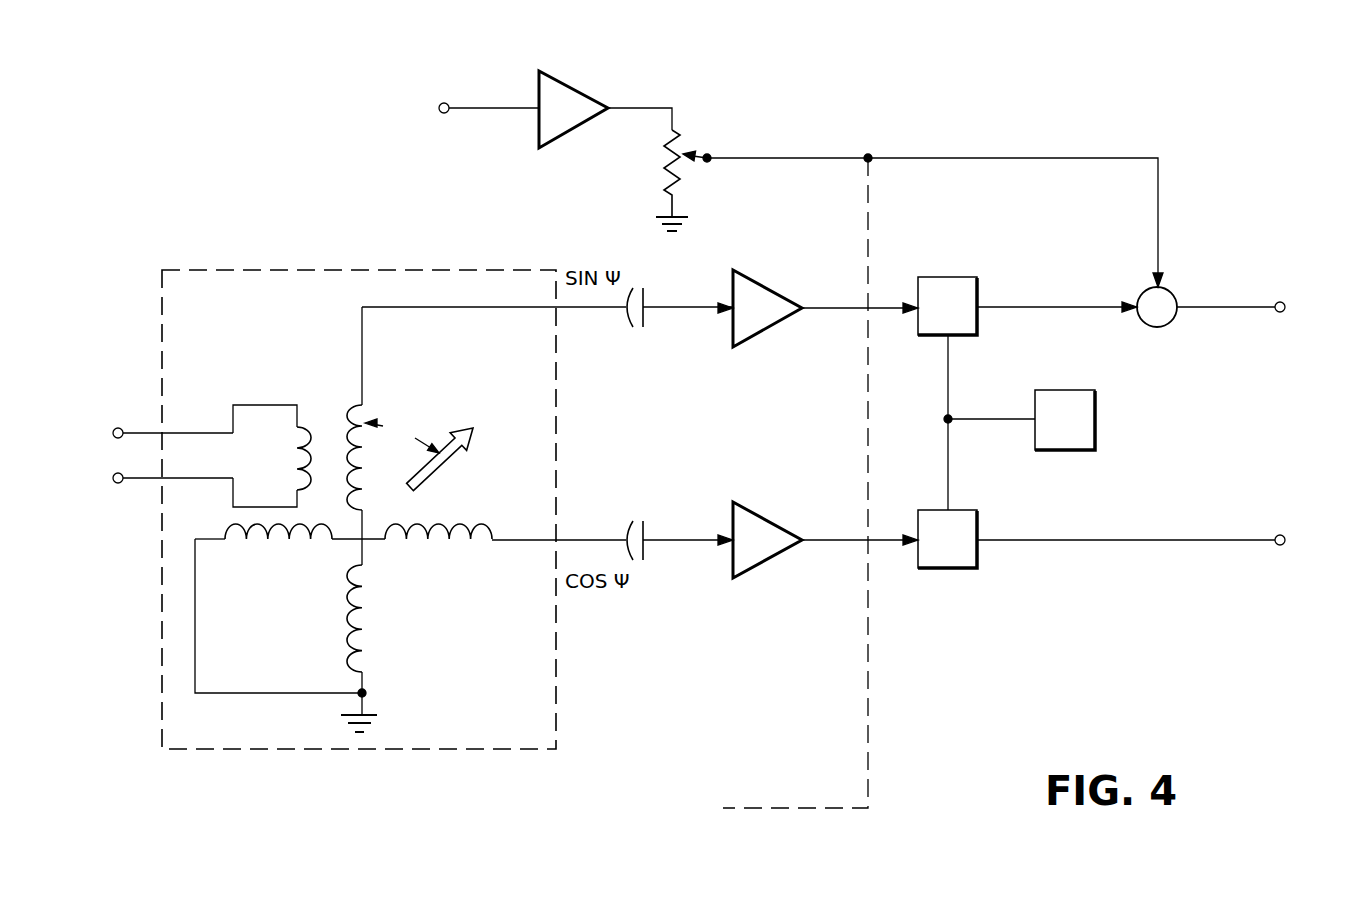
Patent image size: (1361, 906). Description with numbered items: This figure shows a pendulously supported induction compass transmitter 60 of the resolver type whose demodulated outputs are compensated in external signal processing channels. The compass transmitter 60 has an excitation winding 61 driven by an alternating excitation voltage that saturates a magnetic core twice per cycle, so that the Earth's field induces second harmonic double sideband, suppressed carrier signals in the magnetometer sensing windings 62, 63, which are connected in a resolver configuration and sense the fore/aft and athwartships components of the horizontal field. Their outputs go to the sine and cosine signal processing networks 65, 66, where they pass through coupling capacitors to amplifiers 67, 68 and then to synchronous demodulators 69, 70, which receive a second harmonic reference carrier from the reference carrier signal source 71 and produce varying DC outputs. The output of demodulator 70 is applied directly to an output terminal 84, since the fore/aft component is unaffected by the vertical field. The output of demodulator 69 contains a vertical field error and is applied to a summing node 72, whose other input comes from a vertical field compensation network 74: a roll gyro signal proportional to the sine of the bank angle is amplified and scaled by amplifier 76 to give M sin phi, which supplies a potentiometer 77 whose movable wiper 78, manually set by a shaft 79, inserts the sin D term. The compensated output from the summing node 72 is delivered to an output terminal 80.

The induction compass transmitter 60 is at (566, 702).
The excitation winding 61 is at (280, 442).
The magnetometer sensing winding 62 is at (350, 430).
The magnetometer sensing winding 63 is at (437, 543).
The sine signal processing network 65 is at (1060, 276).
The cosine signal processing network 66 is at (1117, 591).
The amplifier 67 is at (775, 292).
The amplifier 68 is at (762, 565).
The synchronous demodulator 69 is at (938, 277).
The synchronous demodulator 70 is at (948, 570).
The reference carrier signal source 71 is at (1098, 372).
The summing node 72 is at (1175, 298).
The vertical field compensation network 74 is at (758, 62).
The amplifier 76 is at (575, 90).
The potentiometer 77 is at (667, 170).
The movable wiper 78 is at (706, 163).
The shaft 79 is at (870, 232).
The output terminal 80 is at (1285, 303).
The output terminal 84 is at (1285, 536).